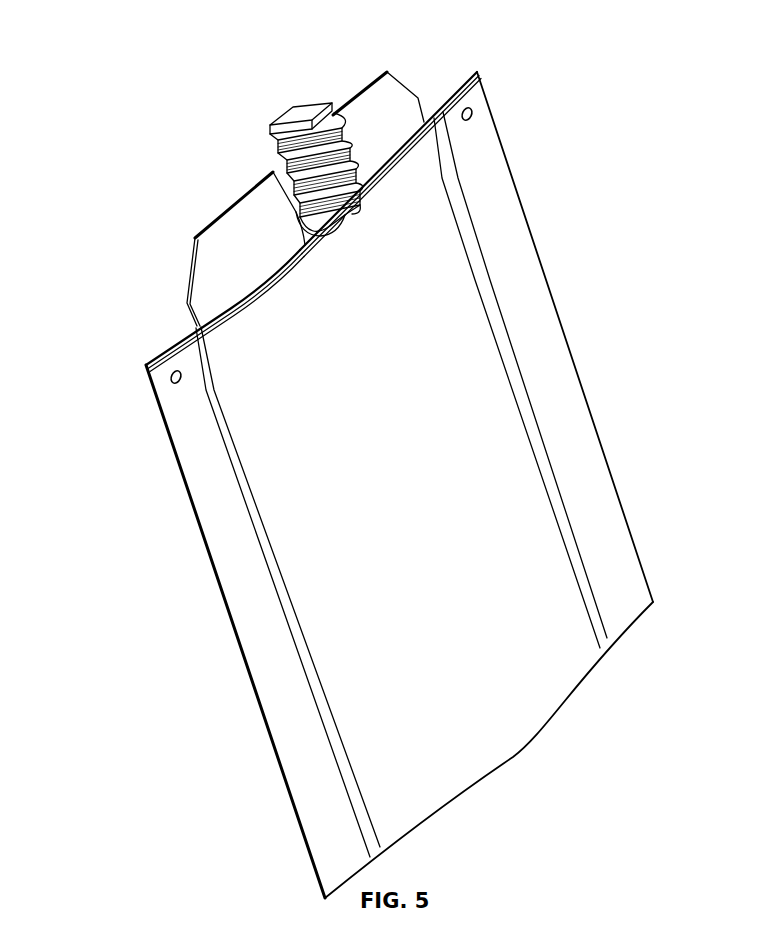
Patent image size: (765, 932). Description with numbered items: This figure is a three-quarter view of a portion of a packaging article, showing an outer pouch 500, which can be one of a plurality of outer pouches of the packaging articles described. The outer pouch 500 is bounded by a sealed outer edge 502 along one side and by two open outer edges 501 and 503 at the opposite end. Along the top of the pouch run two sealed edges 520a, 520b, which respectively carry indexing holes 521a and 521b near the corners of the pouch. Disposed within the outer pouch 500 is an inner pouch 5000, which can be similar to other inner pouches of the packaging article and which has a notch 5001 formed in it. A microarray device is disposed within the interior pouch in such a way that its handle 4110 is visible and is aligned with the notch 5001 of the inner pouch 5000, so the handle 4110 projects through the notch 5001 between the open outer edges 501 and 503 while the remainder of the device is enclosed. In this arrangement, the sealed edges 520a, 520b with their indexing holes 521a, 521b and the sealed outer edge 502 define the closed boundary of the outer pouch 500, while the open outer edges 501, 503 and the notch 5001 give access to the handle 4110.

The outer pouch 500 is at (515, 762).
The sealed outer edge 502 is at (568, 673).
The open outer edge 501 is at (240, 293).
The open outer edge 503 is at (313, 221).
The handle 4110 is at (303, 112).
The inner pouch 5000 is at (181, 277).
The notch 5001 is at (280, 170).
The sealed edge 520a is at (173, 342).
The sealed edge 520b is at (460, 84).
The indexing hole 521a is at (170, 378).
The indexing hole 521b is at (474, 112).